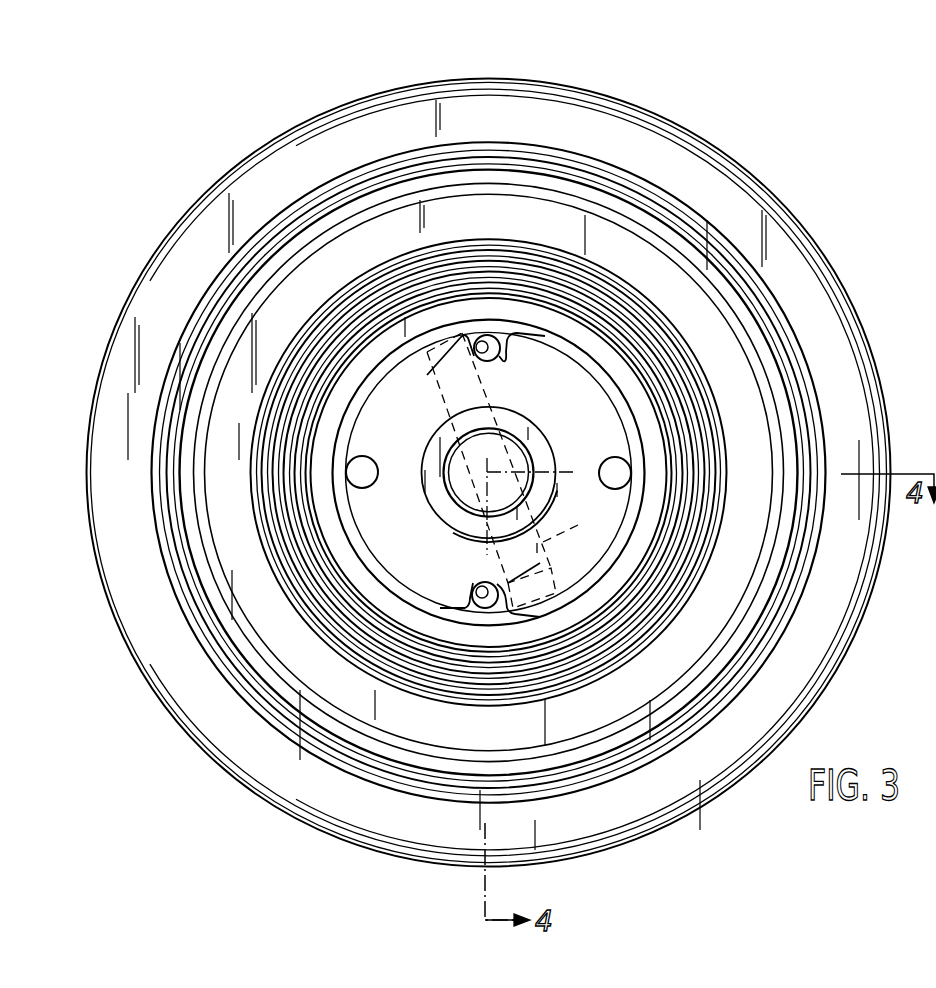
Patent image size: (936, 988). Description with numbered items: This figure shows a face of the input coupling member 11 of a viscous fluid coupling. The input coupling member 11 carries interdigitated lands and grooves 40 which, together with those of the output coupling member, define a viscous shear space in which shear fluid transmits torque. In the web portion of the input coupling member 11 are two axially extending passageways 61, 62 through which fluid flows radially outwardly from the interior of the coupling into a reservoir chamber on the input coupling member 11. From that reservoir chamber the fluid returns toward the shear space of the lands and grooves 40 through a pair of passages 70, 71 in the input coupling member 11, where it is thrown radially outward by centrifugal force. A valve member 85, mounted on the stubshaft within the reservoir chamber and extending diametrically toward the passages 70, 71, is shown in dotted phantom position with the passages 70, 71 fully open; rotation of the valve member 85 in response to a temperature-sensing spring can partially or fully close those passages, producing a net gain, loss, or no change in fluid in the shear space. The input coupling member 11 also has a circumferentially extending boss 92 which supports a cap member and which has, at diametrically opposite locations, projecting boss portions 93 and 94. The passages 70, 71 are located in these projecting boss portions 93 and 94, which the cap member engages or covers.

The input coupling member 11 is at (225, 775).
The interdigitated lands and grooves 40 is at (692, 320).
The axially extending passageway 61 is at (372, 463).
The axially extending passageway 62 is at (614, 458).
The passage 70 is at (478, 582).
The passage 71 is at (440, 380).
The valve member 85 is at (578, 525).
The boss 92 is at (575, 590).
The projecting boss portion 93 is at (540, 563).
The projecting boss portion 94 is at (505, 363).